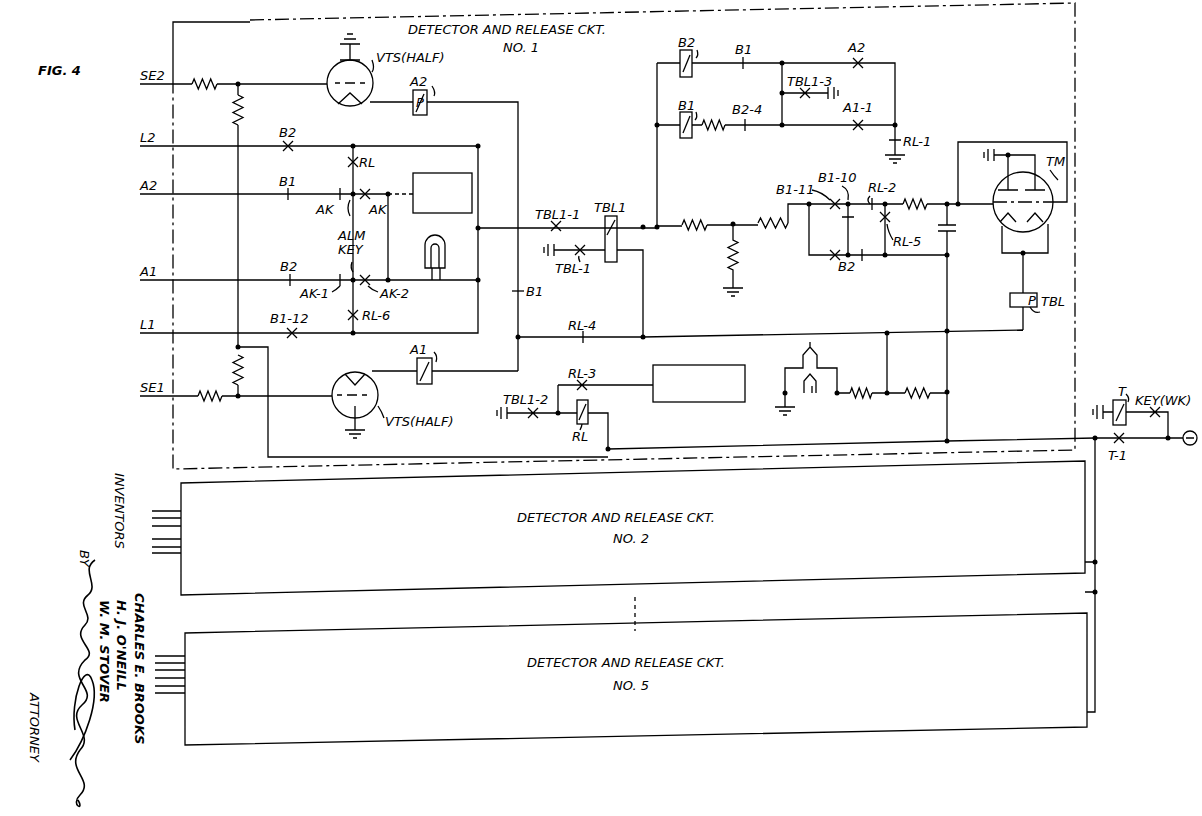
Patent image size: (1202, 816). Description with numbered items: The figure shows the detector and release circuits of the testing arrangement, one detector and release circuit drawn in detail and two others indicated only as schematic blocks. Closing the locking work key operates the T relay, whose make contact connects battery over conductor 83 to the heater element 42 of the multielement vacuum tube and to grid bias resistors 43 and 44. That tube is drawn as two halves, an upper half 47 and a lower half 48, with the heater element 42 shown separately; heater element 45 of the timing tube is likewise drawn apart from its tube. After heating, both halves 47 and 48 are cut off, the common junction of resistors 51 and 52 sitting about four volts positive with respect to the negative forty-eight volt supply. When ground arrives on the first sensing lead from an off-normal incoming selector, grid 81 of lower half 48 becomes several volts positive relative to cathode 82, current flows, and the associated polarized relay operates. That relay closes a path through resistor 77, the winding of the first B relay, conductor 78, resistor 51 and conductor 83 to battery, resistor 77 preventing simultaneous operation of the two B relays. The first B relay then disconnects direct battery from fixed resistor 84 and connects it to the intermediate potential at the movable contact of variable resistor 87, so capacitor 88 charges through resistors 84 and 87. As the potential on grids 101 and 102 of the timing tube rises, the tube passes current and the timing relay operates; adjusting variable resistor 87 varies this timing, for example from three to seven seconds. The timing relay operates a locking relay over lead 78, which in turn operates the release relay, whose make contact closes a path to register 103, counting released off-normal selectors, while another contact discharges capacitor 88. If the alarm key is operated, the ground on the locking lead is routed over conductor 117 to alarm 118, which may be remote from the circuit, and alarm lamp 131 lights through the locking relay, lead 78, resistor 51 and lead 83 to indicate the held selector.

The heater element 42 is at (814, 350).
The grid bias resistor 43 is at (233, 368).
The grid bias resistor 44 is at (233, 112).
The heater element 45 is at (793, 404).
The upper half of tube VTS 47 is at (329, 66).
The lower half of tube VTS 48 is at (334, 380).
The resistor 51 is at (918, 389).
The resistor 52 is at (870, 398).
The resistor 77 is at (714, 130).
The conductor 78 is at (690, 336).
The grid 81 is at (334, 410).
The cathode 82 is at (366, 370).
The conductor 83 is at (1014, 437).
The fixed resistor 84 is at (920, 198).
The variable resistor 87 is at (778, 228).
The capacitor 88 is at (956, 232).
The grid 101 is at (1004, 186).
The grid 102 is at (1044, 224).
The register 103 is at (683, 402).
The conductor 117 is at (390, 256).
The alarm 118 is at (458, 170).
The alarm lamp 131 is at (446, 252).